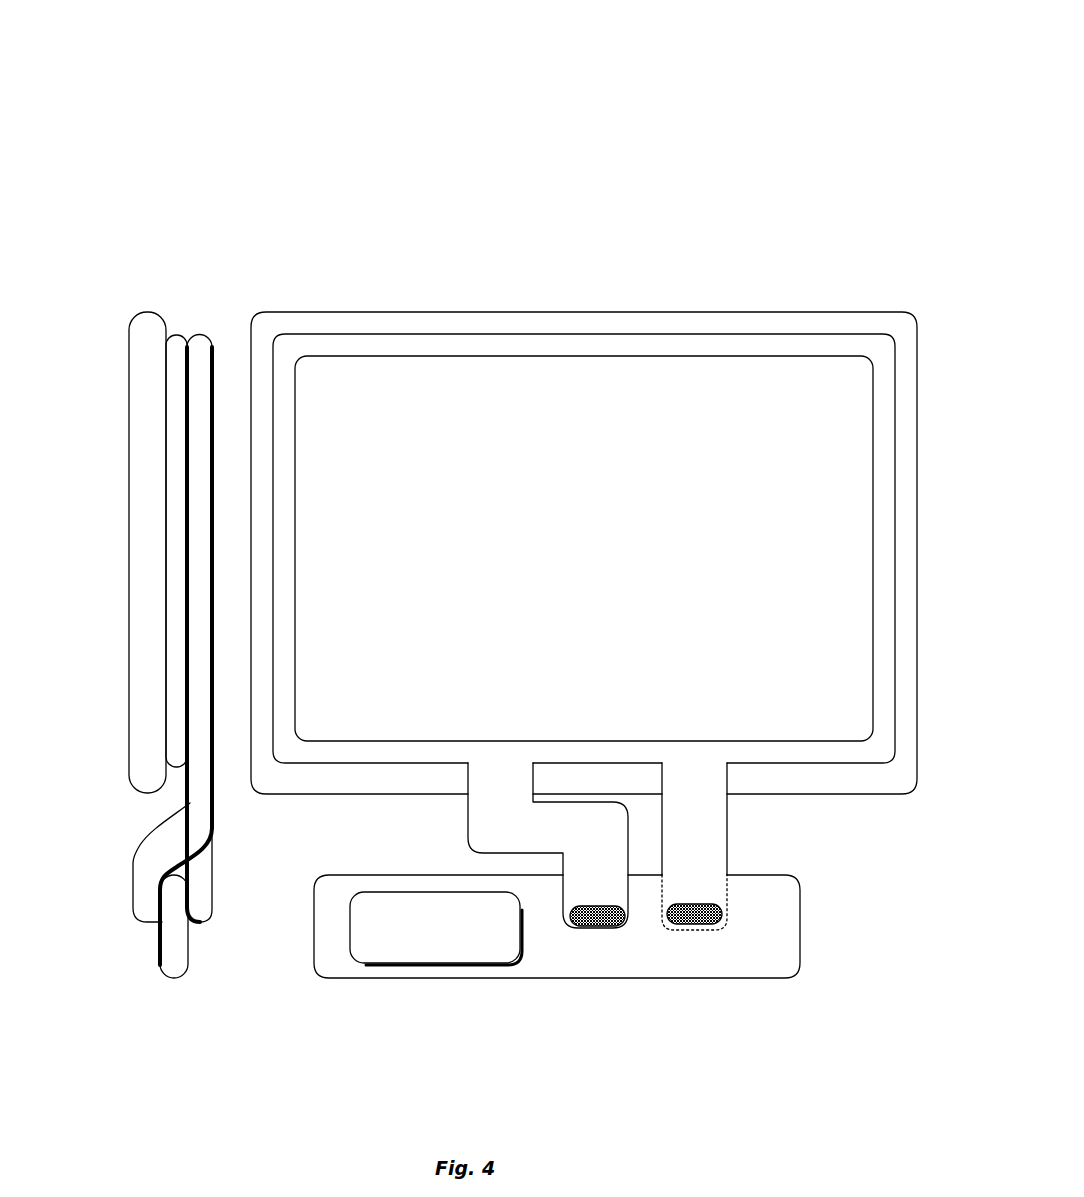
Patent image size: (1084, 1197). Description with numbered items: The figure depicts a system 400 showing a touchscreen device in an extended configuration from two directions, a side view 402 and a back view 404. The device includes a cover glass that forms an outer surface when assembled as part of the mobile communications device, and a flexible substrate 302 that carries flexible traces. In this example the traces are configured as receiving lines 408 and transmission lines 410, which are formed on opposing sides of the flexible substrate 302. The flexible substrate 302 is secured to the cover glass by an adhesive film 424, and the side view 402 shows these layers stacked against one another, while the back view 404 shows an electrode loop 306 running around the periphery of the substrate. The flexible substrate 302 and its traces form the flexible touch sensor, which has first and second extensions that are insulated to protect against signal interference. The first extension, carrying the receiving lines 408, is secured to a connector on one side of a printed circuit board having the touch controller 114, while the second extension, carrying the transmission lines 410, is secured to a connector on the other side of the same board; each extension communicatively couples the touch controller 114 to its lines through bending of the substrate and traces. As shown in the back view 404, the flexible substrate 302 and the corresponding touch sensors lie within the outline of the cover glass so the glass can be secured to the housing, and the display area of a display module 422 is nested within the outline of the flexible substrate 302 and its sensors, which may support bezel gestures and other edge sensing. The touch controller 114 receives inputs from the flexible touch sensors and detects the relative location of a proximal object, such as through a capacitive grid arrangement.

The system 400 is at (212, 92).
The side view of touchscreen device 402 is at (170, 226).
The back view of touchscreen device 404 is at (355, 226).
The receiving lines 408 is at (182, 335).
The adhesive film 424 is at (177, 337).
The flexible substrate 302 is at (202, 337).
The transmission lines 410 is at (212, 340).
The display module 422 is at (400, 360).
The electrode loop 306 is at (712, 336).
The touch controller 114 is at (436, 928).